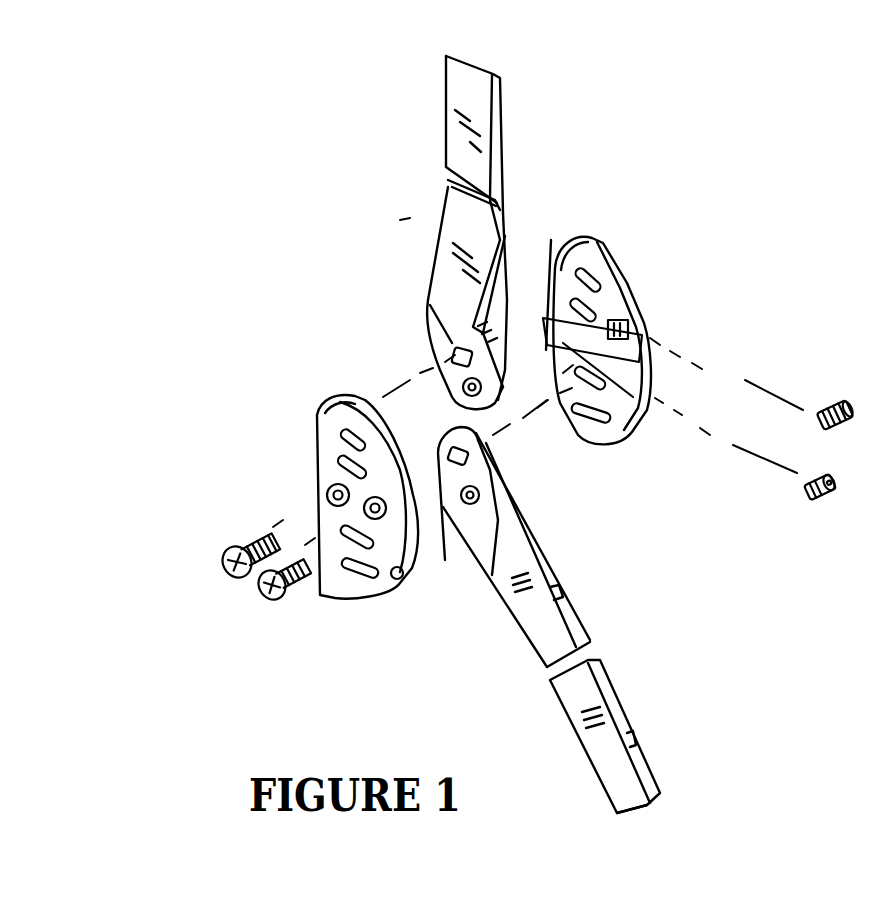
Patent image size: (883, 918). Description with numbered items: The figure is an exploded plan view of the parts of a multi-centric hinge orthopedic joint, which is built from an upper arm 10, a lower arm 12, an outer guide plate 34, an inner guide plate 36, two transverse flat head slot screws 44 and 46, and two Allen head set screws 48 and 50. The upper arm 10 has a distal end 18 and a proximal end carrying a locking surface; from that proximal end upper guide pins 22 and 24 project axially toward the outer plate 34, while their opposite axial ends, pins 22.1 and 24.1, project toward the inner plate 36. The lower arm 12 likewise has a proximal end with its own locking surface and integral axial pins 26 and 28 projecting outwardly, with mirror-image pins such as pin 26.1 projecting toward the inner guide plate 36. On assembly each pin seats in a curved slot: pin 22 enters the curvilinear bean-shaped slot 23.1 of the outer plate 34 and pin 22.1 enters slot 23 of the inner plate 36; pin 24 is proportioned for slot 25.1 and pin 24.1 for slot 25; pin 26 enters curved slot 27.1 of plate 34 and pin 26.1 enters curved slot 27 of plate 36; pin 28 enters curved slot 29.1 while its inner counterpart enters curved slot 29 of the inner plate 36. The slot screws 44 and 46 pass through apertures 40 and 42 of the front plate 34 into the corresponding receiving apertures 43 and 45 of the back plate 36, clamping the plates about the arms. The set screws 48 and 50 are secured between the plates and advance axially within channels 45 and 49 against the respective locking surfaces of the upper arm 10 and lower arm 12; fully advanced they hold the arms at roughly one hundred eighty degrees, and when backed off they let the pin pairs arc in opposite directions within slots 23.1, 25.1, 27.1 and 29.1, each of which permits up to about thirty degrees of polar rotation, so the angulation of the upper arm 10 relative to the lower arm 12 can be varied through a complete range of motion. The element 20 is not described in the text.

The upper arm 10 is at (508, 235).
The lower arm 12 is at (610, 693).
The distal end 18 is at (488, 68).
The handle end 20 is at (647, 805).
The upper guide pin 22 is at (428, 303).
The upper guide pin 22.1 is at (446, 252).
The curvilinear bean-shaped slot 23 is at (627, 268).
The curvilinear bean-shaped slot 23.1 is at (345, 422).
The upper guide pin 24 is at (450, 363).
The upper guide pin 24.1 is at (508, 385).
The slot 25 is at (570, 380).
The slot 25.1 is at (345, 460).
The axial pin 26 is at (447, 530).
The axial pin 26.1 is at (490, 432).
The curved slot 27 is at (612, 402).
The curved slot 27.1 is at (350, 530).
The axial pin 28 is at (498, 520).
The curved slot 29 is at (606, 428).
The curved slot 29.1 is at (385, 582).
The outer guide plate 34 is at (328, 494).
The inner guide plate 36 is at (633, 302).
The aperture 40 is at (364, 508).
The aperture 42 is at (397, 582).
The receiving aperture 43 is at (566, 248).
The slot screw 44 is at (220, 577).
The receiving aperture 45 is at (652, 390).
The slot screw 46 is at (263, 600).
The Allen head set screw 48 is at (840, 405).
The channel 49 is at (660, 323).
The Allen head set screw 50 is at (807, 483).